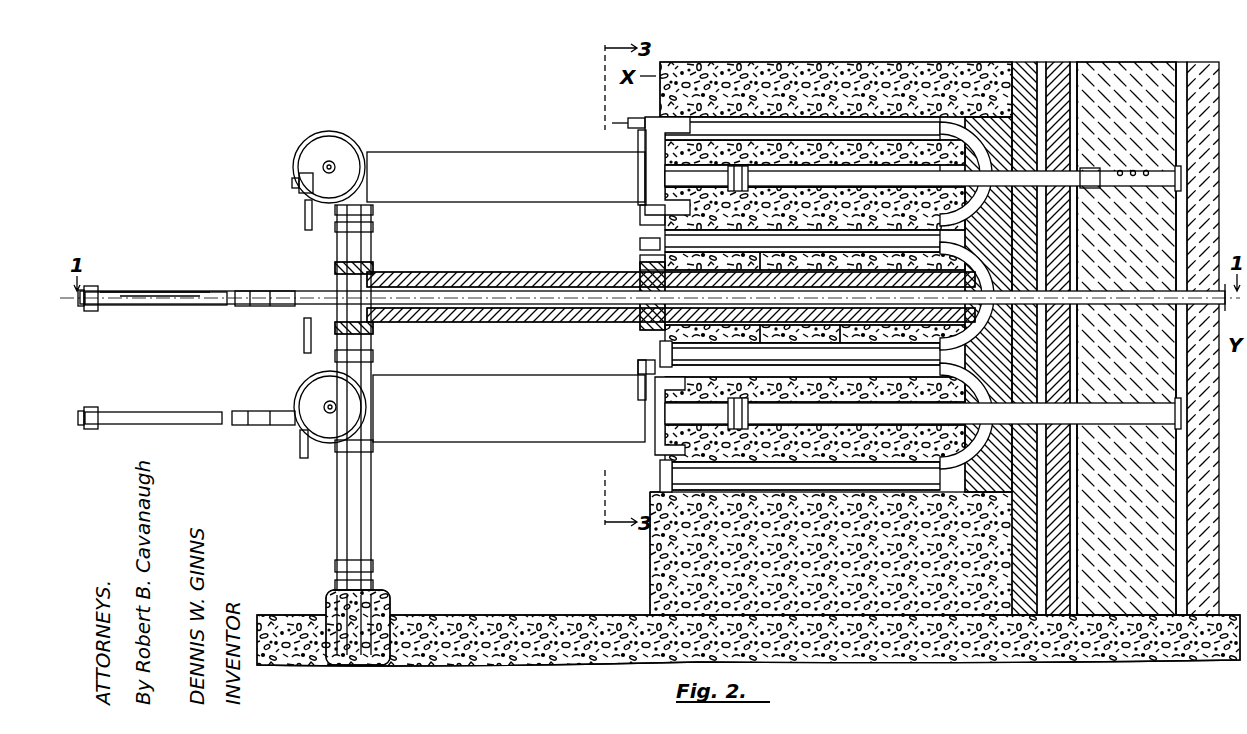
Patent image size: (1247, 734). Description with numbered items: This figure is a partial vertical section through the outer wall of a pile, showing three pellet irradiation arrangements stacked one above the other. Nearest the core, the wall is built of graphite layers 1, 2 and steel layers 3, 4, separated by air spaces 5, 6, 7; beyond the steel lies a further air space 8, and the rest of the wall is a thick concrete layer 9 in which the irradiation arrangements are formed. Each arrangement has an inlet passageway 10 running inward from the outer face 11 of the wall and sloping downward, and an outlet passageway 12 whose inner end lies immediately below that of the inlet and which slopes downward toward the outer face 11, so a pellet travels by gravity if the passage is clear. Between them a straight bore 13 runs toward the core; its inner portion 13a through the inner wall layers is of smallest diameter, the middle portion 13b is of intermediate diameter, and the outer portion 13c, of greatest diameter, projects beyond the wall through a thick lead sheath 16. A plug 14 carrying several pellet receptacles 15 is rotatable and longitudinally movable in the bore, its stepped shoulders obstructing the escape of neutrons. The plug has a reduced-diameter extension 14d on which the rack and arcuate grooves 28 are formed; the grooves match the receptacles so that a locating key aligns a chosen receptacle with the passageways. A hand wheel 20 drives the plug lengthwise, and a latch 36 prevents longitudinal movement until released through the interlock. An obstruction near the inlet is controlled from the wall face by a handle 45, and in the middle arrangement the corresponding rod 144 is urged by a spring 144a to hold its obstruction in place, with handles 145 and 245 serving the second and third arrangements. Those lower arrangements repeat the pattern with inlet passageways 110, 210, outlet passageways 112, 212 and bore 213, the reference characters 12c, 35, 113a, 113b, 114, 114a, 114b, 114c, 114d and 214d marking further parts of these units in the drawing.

The graphite layer 1 is at (1202, 600).
The graphite layer 2 is at (1118, 605).
The steel layer 3 is at (1062, 615).
The steel layer 4 is at (1032, 615).
The air space 5 is at (1181, 608).
The air space 6 is at (1112, 600).
The air space 7 is at (1055, 615).
The air space 8 is at (1012, 618).
The concrete layer 9 is at (835, 606).
The inlet passageway 10 is at (718, 100).
The outer face 11 is at (658, 345).
The outlet passageway 12 is at (658, 478).
The concrete layer 12c is at (815, 208).
The straight bore 13 is at (818, 262).
The inner portion of the bore 13a is at (1085, 170).
The middle portion of the bore 13b is at (773, 178).
The outer portion of the bore 13c is at (712, 268).
The plug 14 is at (671, 308).
The reduced diameter extension of the plug 14d is at (300, 190).
The pellet receptacles 15 is at (1146, 170).
The lead sheath 16 is at (494, 194).
The hand wheel 20 is at (358, 142).
The arcuate grooves 28 is at (272, 309).
The strut 35 is at (310, 218).
The latch 36 is at (300, 440).
The handle 45 is at (612, 123).
The inlet passageway 110 is at (655, 205).
The outlet passageway 112 is at (955, 305).
The rod end 113a is at (650, 284).
The concrete layer 113b is at (815, 270).
The concrete layer 114 is at (800, 327).
The concrete layer 114a is at (815, 329).
The concrete layer 114b is at (712, 330).
The shaft portion 114c is at (462, 318).
The rod 114d is at (190, 294).
The operating rod 144 is at (640, 262).
The spring 144a is at (645, 218).
The handle 145 is at (640, 243).
The inlet passageway 210 is at (645, 400).
The outlet passageway 212 is at (815, 446).
The straight bore 213 is at (815, 392).
The rod 214d is at (215, 392).
The handle 245 is at (638, 368).